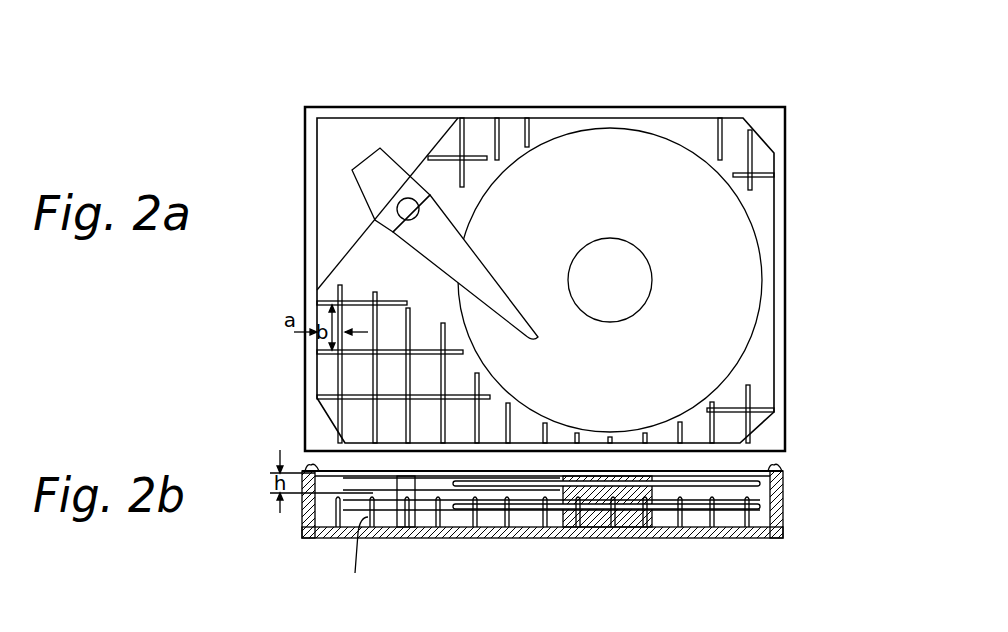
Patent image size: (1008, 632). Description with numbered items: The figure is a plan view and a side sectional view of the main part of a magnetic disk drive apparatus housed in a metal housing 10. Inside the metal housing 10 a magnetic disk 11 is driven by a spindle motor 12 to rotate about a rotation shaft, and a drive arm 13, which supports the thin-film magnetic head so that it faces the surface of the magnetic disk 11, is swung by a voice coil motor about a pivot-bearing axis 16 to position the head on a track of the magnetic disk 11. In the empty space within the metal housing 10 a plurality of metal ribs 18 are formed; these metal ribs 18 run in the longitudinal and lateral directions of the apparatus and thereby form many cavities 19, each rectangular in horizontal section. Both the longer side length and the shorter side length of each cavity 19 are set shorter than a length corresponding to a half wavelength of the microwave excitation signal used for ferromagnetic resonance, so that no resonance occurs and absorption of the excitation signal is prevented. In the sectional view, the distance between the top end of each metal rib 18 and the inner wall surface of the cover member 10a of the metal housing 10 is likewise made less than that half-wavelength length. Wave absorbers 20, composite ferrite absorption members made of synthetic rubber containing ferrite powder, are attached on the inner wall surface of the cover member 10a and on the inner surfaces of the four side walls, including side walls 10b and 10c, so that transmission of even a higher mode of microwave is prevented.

In FIG. 2a, the metal housing 10 is at (760, 117).
In FIG. 2b, the metal housing 10 is at (493, 535).
In FIG. 2b, the cover member 10a is at (742, 472).
In FIG. 2b, the side wall 10b is at (303, 522).
In FIG. 2b, the side wall 10c is at (785, 527).
In FIG. 2a, the magnetic disk 11 is at (745, 267).
In FIG. 2b, the magnetic disk 11 is at (693, 483).
In FIG. 2a, the spindle motor 12 is at (632, 265).
In FIG. 2b, the spindle motor 12 is at (627, 518).
In FIG. 2a, the drive arm 13 is at (445, 238).
In FIG. 2a, the pivot-bearing axis 16 is at (408, 208).
In FIG. 2a, the metal ribs 18 is at (357, 400).
In FIG. 2b, the metal ribs 18 is at (361, 562).
In FIG. 2a, the cavities 19 is at (357, 383).
In FIG. 2b, the wave absorbers 20 is at (765, 496).